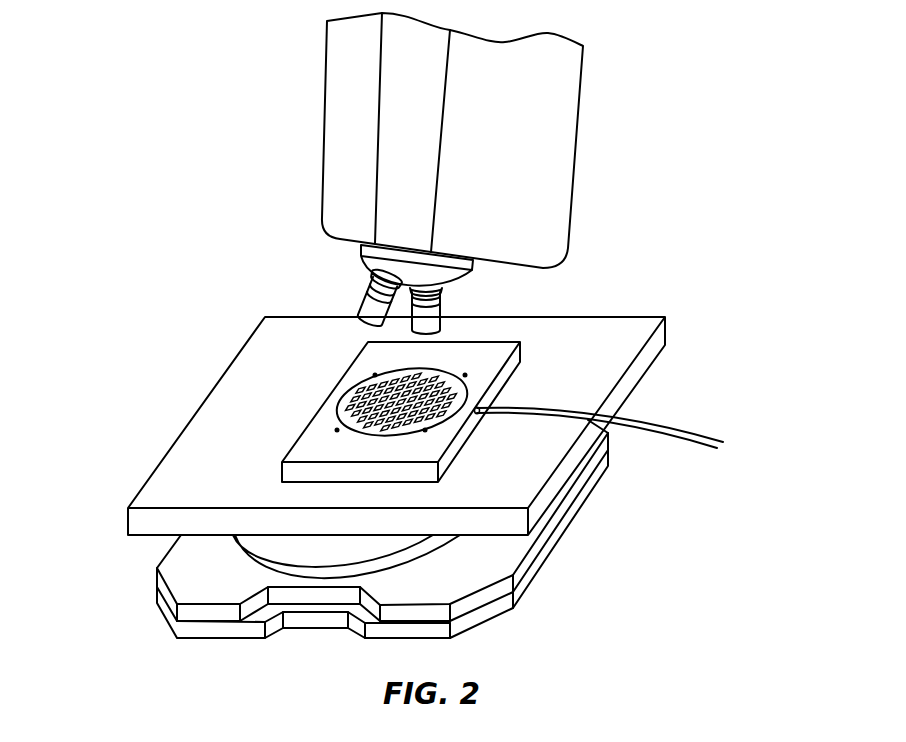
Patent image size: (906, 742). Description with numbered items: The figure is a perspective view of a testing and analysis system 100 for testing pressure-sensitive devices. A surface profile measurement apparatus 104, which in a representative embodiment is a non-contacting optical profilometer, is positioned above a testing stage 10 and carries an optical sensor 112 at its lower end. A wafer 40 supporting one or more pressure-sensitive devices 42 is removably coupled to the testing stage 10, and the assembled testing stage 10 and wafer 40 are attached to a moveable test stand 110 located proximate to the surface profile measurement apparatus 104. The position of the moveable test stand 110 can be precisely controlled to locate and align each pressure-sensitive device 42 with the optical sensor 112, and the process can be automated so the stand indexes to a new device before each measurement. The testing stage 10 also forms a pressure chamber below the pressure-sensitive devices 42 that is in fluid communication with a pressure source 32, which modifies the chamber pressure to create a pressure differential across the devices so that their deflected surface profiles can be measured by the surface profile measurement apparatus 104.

The testing and analysis system 100 is at (198, 205).
The surface profile measurement apparatus 104 is at (543, 143).
The optical sensor 112 is at (443, 305).
The testing stage 10 is at (313, 447).
The wafer 40 is at (338, 428).
The pressure-sensitive device 42 is at (367, 380).
The pressure source 32 is at (724, 451).
The moveable test stand 110 is at (510, 462).